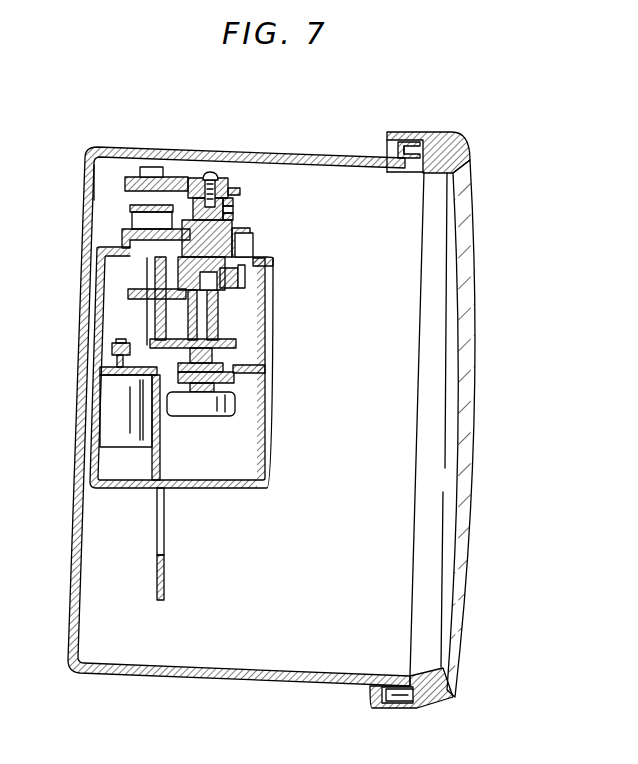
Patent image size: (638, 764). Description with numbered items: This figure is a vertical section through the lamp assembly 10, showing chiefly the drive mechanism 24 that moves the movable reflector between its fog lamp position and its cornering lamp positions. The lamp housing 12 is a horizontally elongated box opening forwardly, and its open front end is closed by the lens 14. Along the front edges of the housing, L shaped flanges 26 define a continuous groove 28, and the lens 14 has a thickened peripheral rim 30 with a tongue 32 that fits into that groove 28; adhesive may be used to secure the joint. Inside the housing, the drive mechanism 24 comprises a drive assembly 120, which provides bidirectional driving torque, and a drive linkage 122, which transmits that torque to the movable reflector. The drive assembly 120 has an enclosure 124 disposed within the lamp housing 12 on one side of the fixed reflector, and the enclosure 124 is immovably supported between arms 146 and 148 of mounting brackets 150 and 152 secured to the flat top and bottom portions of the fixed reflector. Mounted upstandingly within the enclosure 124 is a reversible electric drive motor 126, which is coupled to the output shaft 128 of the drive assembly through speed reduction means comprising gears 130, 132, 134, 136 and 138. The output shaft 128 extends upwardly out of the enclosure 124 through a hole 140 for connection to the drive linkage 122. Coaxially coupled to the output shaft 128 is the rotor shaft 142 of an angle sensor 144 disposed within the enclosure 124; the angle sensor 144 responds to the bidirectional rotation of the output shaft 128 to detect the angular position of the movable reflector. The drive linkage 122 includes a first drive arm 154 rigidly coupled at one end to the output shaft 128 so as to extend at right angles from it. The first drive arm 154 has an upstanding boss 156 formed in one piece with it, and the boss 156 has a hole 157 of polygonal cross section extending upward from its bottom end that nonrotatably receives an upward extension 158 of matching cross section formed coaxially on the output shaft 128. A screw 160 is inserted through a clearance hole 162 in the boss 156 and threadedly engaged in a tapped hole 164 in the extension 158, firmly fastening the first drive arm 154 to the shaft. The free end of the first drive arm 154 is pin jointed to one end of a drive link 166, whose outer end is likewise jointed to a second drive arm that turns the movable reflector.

The lamp assembly 10 is at (500, 110).
The lamp housing 12 is at (249, 684).
The lens 14 is at (435, 384).
The drive mechanism 24 is at (276, 152).
The L shaped flanges 26 is at (388, 137).
The groove 28 is at (400, 148).
The thickened peripheral rim 30 is at (437, 140).
The tongue 32 is at (410, 148).
The drive assembly 120 is at (186, 401).
The drive linkage 122 is at (165, 168).
The enclosure 124 is at (268, 412).
The reversible electric drive motor 126 is at (107, 412).
The output shaft 128 is at (245, 245).
The gear 130 is at (108, 353).
The gear 132 is at (150, 337).
The gear 134 is at (237, 343).
The gear 136 is at (132, 292).
The gear 138 is at (245, 282).
The hole 140 is at (232, 228).
The rotor shaft 142 is at (220, 315).
The angle sensor 144 is at (207, 412).
The arm 146 is at (132, 220).
The arm 148 is at (158, 568).
The mounting bracket 150 is at (128, 204).
The mounting bracket 152 is at (165, 590).
The first drive arm 154 is at (242, 192).
The boss 156 is at (232, 218).
The hole 157 is at (232, 210).
The upward extension 158 is at (233, 202).
The screw 160 is at (227, 177).
The clearance hole 162 is at (210, 172).
The tapped hole 164 is at (97, 177).
The drive link 166 is at (127, 177).